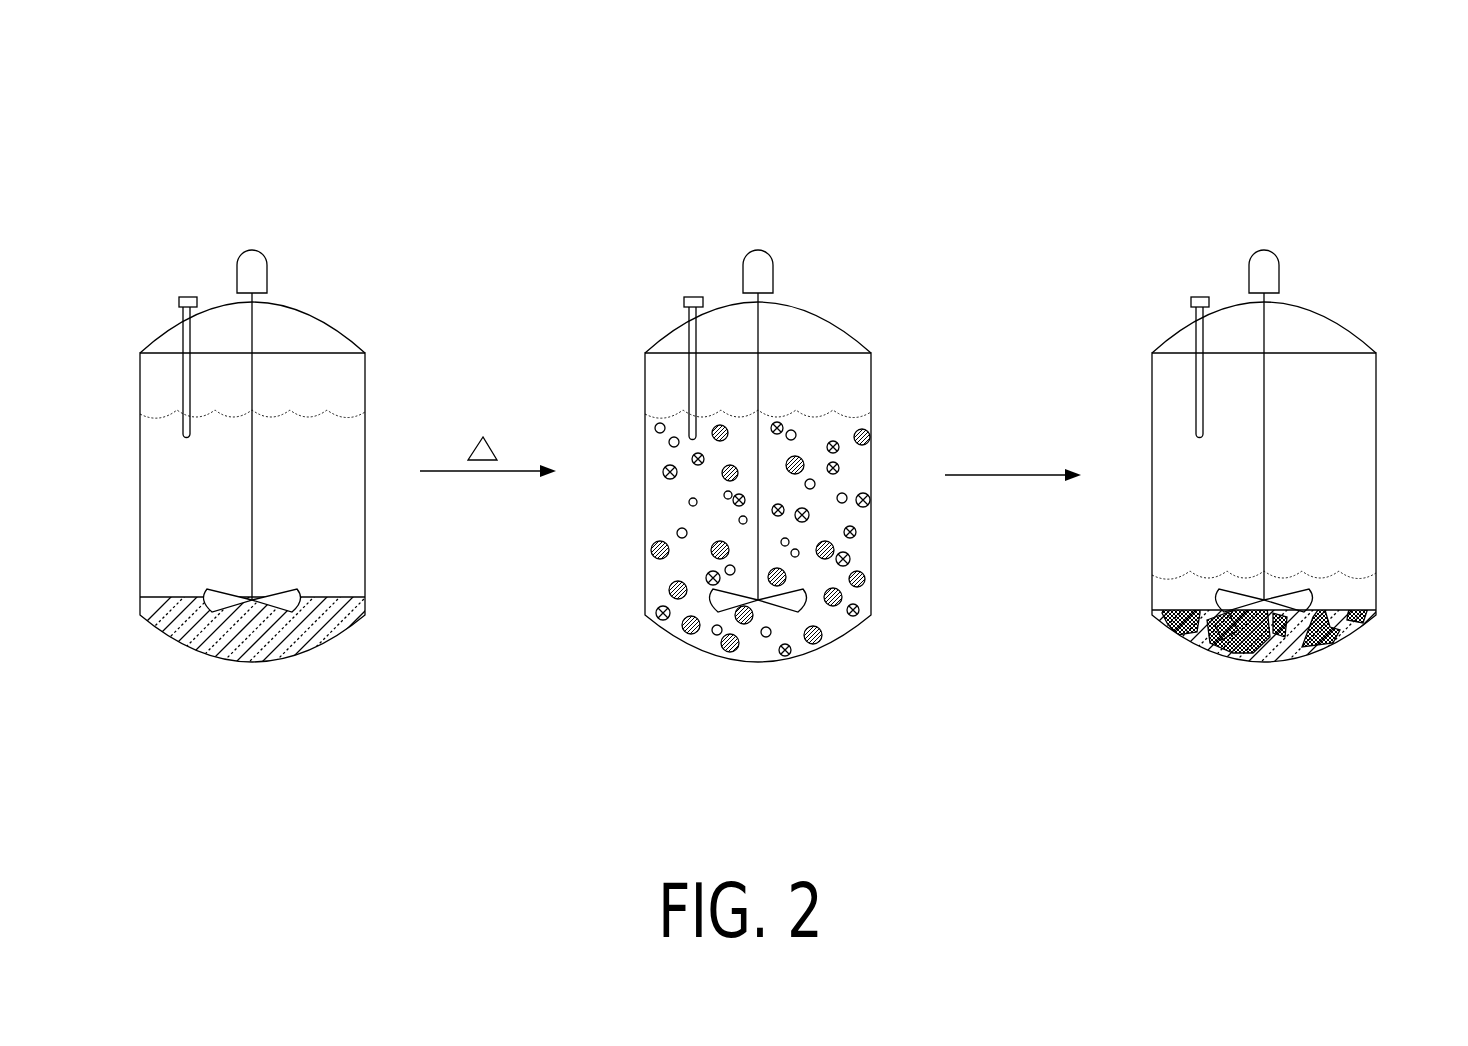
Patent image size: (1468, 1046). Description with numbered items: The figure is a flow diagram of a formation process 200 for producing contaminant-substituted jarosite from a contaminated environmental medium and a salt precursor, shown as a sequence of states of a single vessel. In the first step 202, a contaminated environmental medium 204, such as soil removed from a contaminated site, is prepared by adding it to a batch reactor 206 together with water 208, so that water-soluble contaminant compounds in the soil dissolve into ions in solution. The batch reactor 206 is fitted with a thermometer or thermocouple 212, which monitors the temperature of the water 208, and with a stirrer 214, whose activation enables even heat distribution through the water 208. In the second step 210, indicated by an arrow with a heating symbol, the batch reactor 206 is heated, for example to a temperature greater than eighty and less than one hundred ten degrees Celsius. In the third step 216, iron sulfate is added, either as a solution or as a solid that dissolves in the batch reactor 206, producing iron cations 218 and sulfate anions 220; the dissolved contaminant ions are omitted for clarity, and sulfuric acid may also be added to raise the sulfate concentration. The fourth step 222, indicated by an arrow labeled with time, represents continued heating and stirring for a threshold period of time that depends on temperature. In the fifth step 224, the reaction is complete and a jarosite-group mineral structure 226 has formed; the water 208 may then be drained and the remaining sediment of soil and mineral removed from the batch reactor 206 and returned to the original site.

The formation process 200 is at (1366, 92).
The first step 202 is at (174, 205).
The contaminated environmental medium 204 is at (168, 597).
The batch reactor 206 is at (310, 312).
The water 208 is at (326, 487).
The second step 210 is at (494, 378).
The thermometer or thermocouple 212 is at (182, 380).
The stirrer 214 is at (280, 607).
The third step 216 is at (680, 225).
The iron cations 218 is at (669, 445).
The sulfate anions 220 is at (850, 558).
The fourth step 222 is at (997, 398).
The fifth step 224 is at (1196, 208).
The jarosite-group mineral structure 226 is at (1222, 650).